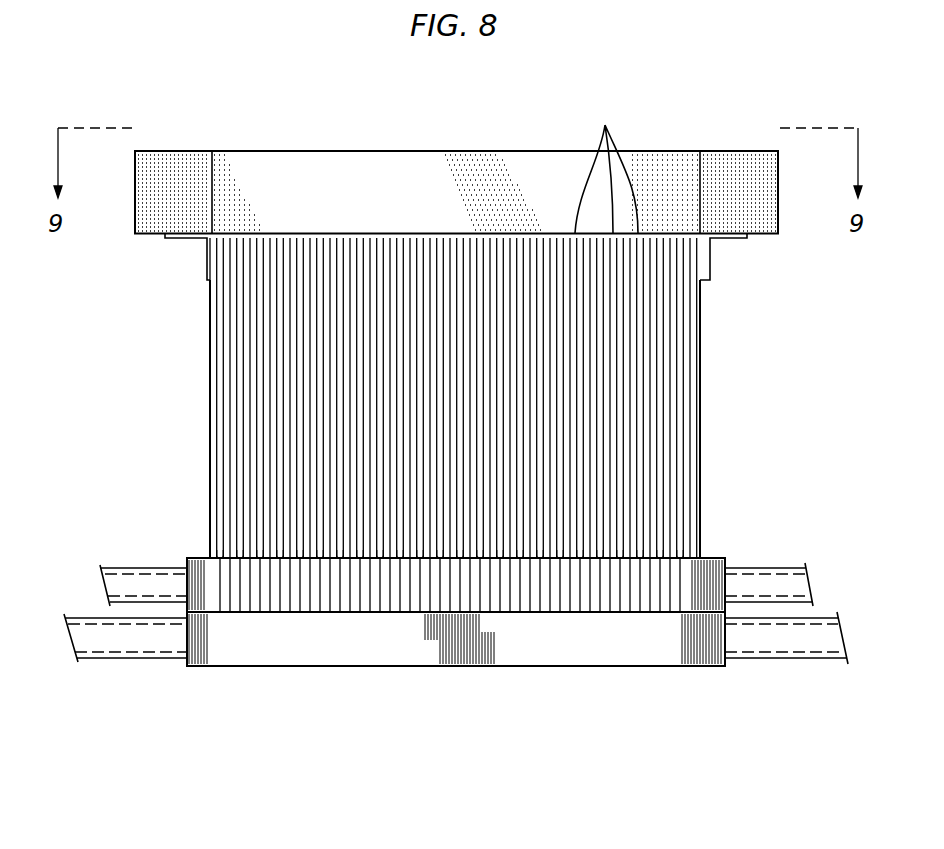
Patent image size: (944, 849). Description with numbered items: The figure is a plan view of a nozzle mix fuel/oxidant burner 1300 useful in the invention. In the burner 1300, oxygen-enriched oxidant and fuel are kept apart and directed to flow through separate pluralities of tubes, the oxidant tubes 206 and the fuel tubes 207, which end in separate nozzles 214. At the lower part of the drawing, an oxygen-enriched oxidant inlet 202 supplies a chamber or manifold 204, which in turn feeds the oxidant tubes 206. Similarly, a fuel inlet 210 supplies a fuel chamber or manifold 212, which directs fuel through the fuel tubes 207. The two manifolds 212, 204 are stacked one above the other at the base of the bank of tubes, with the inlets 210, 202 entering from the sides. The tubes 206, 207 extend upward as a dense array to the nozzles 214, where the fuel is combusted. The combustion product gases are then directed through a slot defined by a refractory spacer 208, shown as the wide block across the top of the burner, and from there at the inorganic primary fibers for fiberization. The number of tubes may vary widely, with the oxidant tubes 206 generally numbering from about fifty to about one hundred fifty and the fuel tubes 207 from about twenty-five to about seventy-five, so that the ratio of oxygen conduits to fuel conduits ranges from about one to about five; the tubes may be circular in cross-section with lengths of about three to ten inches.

The nozzle mix fuel/oxidant burner 1300 is at (764, 334).
The refractory spacer 208 is at (172, 150).
The nozzles 214 is at (605, 125).
The fuel tubes 207 is at (210, 440).
The oxidant tubes 206 is at (698, 440).
The fuel inlet 210 is at (137, 578).
The fuel chamber or manifold 212 is at (718, 578).
The oxygen-enriched oxidant inlet 202 is at (148, 648).
The oxidant chamber or manifold 204 is at (700, 650).